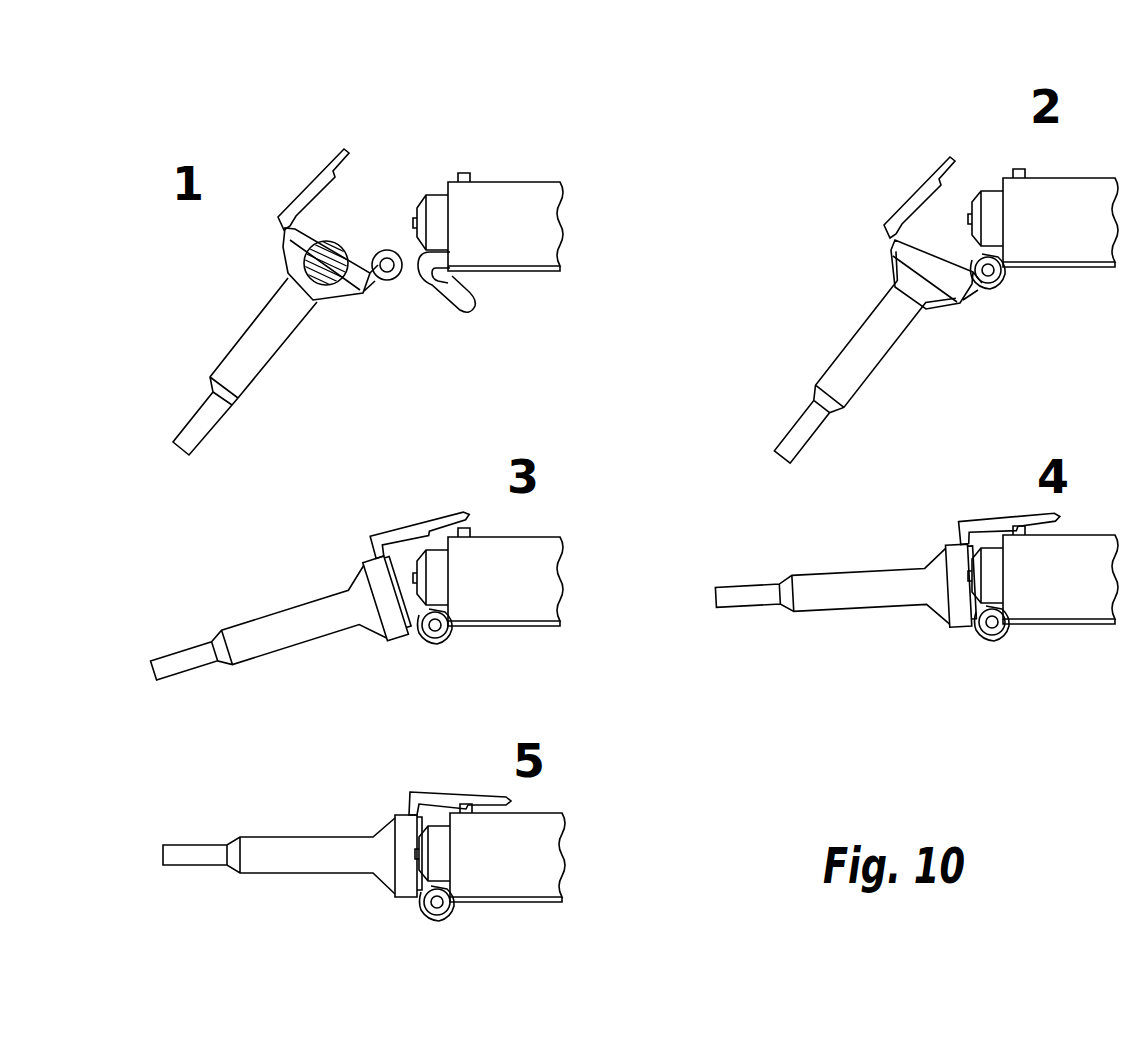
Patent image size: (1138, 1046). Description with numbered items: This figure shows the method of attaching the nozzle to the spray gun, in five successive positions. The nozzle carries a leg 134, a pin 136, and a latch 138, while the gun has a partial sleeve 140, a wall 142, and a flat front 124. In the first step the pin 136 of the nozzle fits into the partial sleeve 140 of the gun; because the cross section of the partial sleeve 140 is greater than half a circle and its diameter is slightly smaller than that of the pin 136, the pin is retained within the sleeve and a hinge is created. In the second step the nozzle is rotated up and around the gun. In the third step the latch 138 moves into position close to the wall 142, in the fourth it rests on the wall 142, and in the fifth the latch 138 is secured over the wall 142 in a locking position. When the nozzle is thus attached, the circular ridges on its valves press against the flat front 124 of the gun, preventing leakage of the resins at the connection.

The flat front 124 is at (415, 214).
The leg 134 is at (370, 286).
The pin 136 is at (394, 273).
The latch 138 is at (319, 175).
The partial sleeve 140 is at (452, 278).
The wall 142 is at (463, 172).